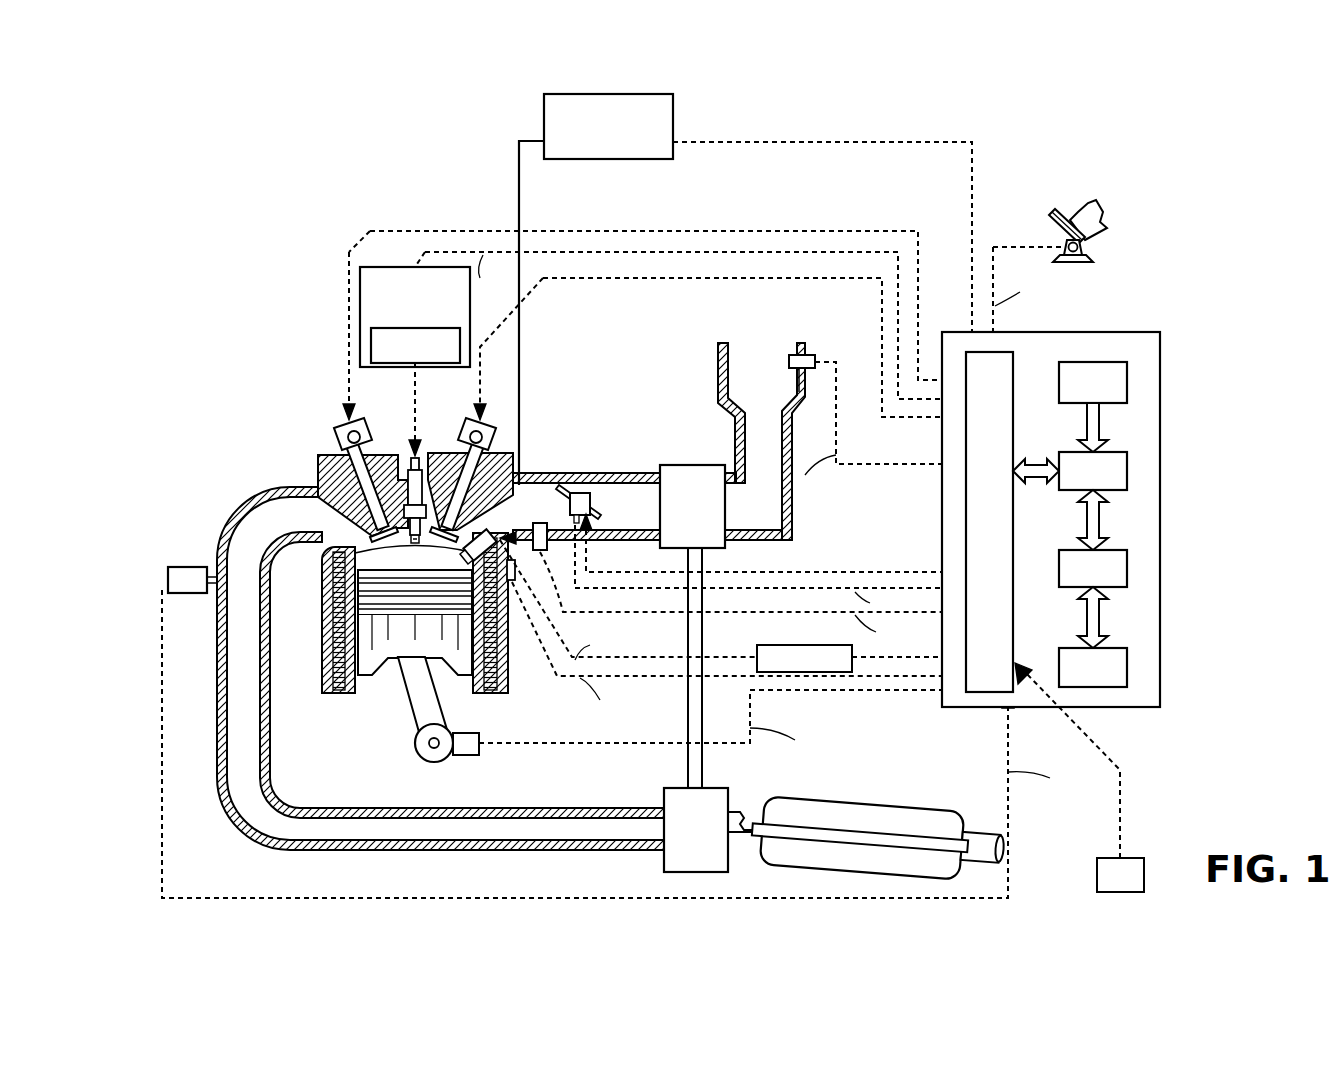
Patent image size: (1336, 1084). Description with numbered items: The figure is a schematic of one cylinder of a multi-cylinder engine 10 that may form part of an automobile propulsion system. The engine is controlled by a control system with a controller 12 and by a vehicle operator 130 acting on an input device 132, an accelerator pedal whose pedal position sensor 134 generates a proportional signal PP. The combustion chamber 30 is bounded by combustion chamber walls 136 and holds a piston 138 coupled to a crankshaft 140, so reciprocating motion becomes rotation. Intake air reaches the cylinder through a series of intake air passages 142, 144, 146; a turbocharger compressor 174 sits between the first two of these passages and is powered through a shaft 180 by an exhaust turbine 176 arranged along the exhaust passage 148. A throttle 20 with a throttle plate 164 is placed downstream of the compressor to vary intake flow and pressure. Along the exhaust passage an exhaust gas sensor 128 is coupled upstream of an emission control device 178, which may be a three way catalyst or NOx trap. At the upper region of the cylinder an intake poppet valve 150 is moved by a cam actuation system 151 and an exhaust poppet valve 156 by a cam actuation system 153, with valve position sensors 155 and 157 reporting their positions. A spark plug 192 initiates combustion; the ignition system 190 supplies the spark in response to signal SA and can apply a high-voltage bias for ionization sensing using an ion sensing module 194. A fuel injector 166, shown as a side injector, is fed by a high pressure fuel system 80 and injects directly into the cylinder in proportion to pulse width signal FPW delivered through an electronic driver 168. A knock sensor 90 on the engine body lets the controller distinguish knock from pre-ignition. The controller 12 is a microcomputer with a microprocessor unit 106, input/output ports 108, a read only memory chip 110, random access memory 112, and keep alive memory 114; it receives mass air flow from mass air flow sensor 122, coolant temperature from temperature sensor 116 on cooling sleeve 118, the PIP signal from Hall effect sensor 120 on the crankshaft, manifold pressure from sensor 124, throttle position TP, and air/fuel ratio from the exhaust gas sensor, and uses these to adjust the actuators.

The engine 10 is at (148, 168).
The controller 12 is at (1160, 335).
The throttle 20 is at (585, 490).
The combustion chamber 30 is at (322, 575).
The fuel system 80 is at (673, 108).
The knock sensor 90 is at (1133, 886).
The microprocessor unit 106 is at (1127, 472).
The input/output ports 108 is at (1013, 362).
The read only memory chip 110 is at (1127, 382).
The random access memory 112 is at (1127, 568).
The keep alive memory 114 is at (1127, 668).
The temperature sensor 116 is at (515, 590).
The cooling sleeve 118 is at (498, 650).
The Hall effect sensor 120 is at (466, 755).
The mass air flow sensor 122 is at (806, 355).
The manifold pressure sensor 124 is at (552, 575).
The exhaust gas sensor 128 is at (168, 575).
The vehicle operator 130 is at (1108, 228).
The input device 132 is at (1052, 222).
The pedal position sensor 134 is at (1098, 254).
The combustion chamber walls 136 is at (352, 693).
The piston 138 is at (398, 665).
The crankshaft 140 is at (425, 760).
The intake air passage 142 is at (784, 389).
The intake air passage 144 is at (653, 518).
The intake air passage 146 is at (558, 518).
The exhaust passage 148 is at (314, 528).
The intake poppet valve 150 is at (455, 518).
The cam actuation system 151 is at (470, 428).
The cam actuation system 153 is at (360, 428).
The valve position sensor 155 is at (494, 440).
The exhaust poppet valve 156 is at (374, 518).
The valve position sensor 157 is at (338, 442).
The throttle plate 164 is at (548, 488).
The fuel injector 166 is at (713, 584).
The electronic driver 168 is at (764, 645).
The compressor 174 is at (678, 465).
The exhaust turbine 176 is at (664, 858).
The emission control device 178 is at (925, 806).
The shaft 180 is at (703, 762).
The ignition system 190 is at (377, 270).
The spark plug 192 is at (408, 498).
The ion sensing module 194 is at (371, 347).